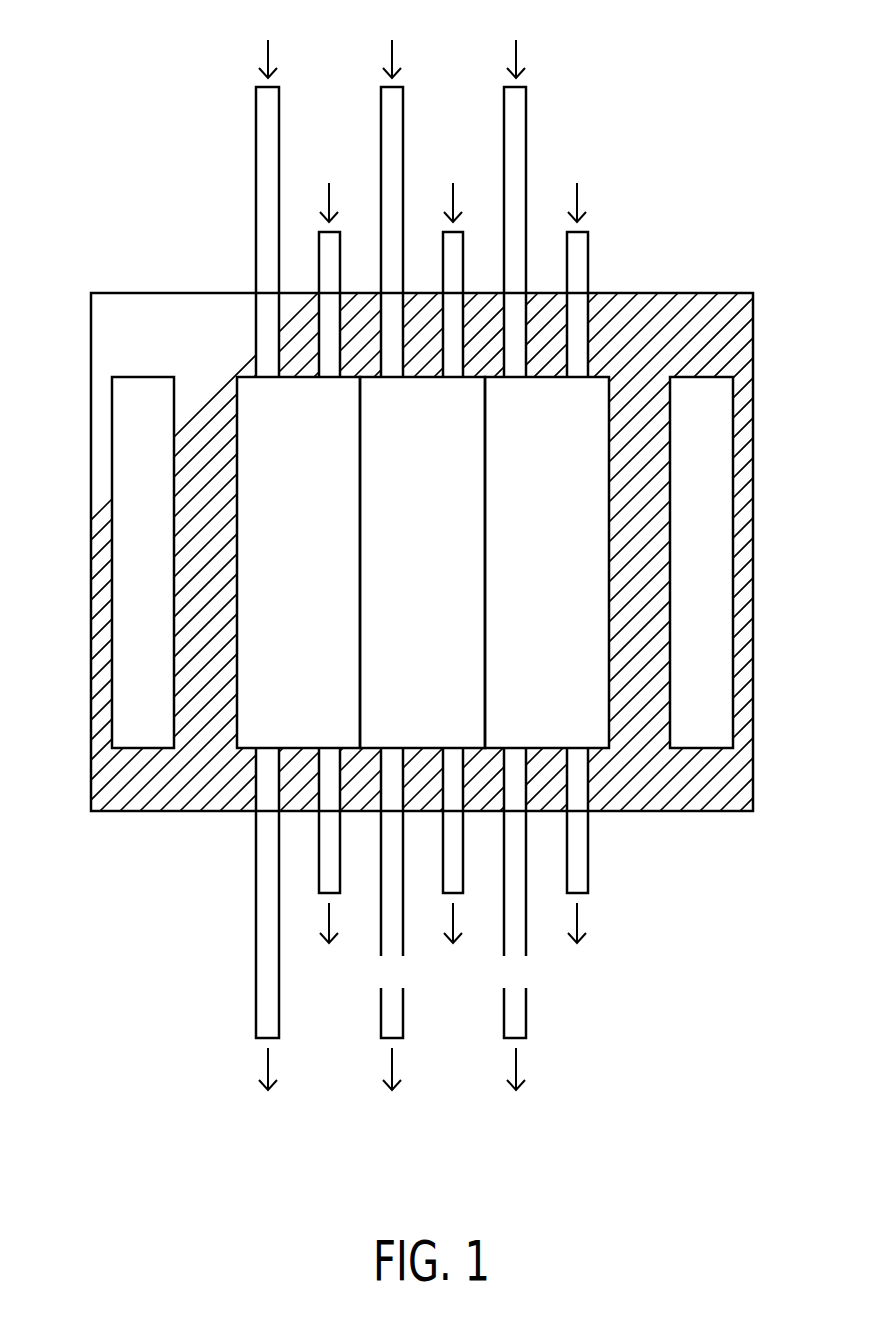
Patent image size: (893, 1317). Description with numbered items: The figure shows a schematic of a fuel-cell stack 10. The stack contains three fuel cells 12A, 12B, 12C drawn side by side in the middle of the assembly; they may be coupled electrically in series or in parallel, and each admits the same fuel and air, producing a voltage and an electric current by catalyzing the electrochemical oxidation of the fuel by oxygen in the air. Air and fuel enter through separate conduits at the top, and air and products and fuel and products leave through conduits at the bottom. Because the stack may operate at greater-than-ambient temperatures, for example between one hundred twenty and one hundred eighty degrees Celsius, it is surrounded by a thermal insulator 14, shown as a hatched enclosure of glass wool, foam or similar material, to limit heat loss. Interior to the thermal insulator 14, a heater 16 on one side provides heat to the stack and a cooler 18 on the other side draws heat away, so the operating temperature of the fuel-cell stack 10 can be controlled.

The fuel-cell stack 10 is at (141, 109).
The fuel cell 12A is at (279, 574).
The fuel cell 12B is at (403, 574).
The fuel cell 12C is at (528, 574).
The thermal insulator 14 is at (163, 812).
The heater 16 is at (130, 574).
The cooler 18 is at (689, 574).